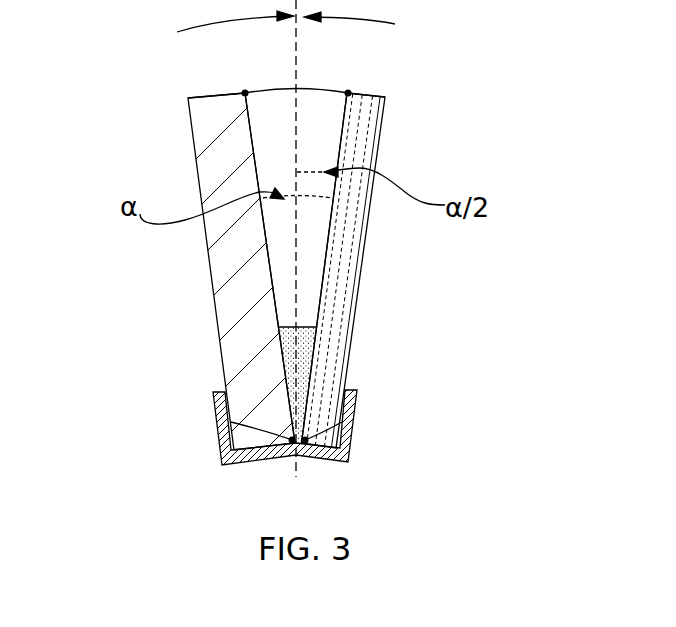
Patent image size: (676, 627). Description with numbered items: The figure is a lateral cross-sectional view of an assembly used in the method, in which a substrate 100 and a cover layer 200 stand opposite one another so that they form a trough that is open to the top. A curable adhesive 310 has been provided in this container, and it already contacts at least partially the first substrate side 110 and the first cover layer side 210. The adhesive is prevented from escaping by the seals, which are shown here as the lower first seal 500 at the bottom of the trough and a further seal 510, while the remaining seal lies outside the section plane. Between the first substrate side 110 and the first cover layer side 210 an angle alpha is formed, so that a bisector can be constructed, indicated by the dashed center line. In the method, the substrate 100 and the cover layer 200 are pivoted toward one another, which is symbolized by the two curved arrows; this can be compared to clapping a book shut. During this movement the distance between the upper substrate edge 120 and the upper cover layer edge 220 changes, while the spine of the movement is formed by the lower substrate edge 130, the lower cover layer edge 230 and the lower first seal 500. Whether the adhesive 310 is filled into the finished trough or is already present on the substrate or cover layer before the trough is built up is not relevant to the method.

The substrate 100 is at (228, 298).
The first substrate side 110 is at (259, 163).
The upper substrate edge 120 is at (245, 93).
The lower substrate edge 130 is at (225, 422).
The cover layer 200 is at (350, 273).
The first cover layer side 210 is at (336, 152).
The upper cover layer edge 220 is at (348, 93).
The lower cover layer edge 230 is at (343, 426).
The curable adhesive 310 is at (308, 345).
The first seal 500 is at (349, 460).
The seal 510 is at (308, 92).